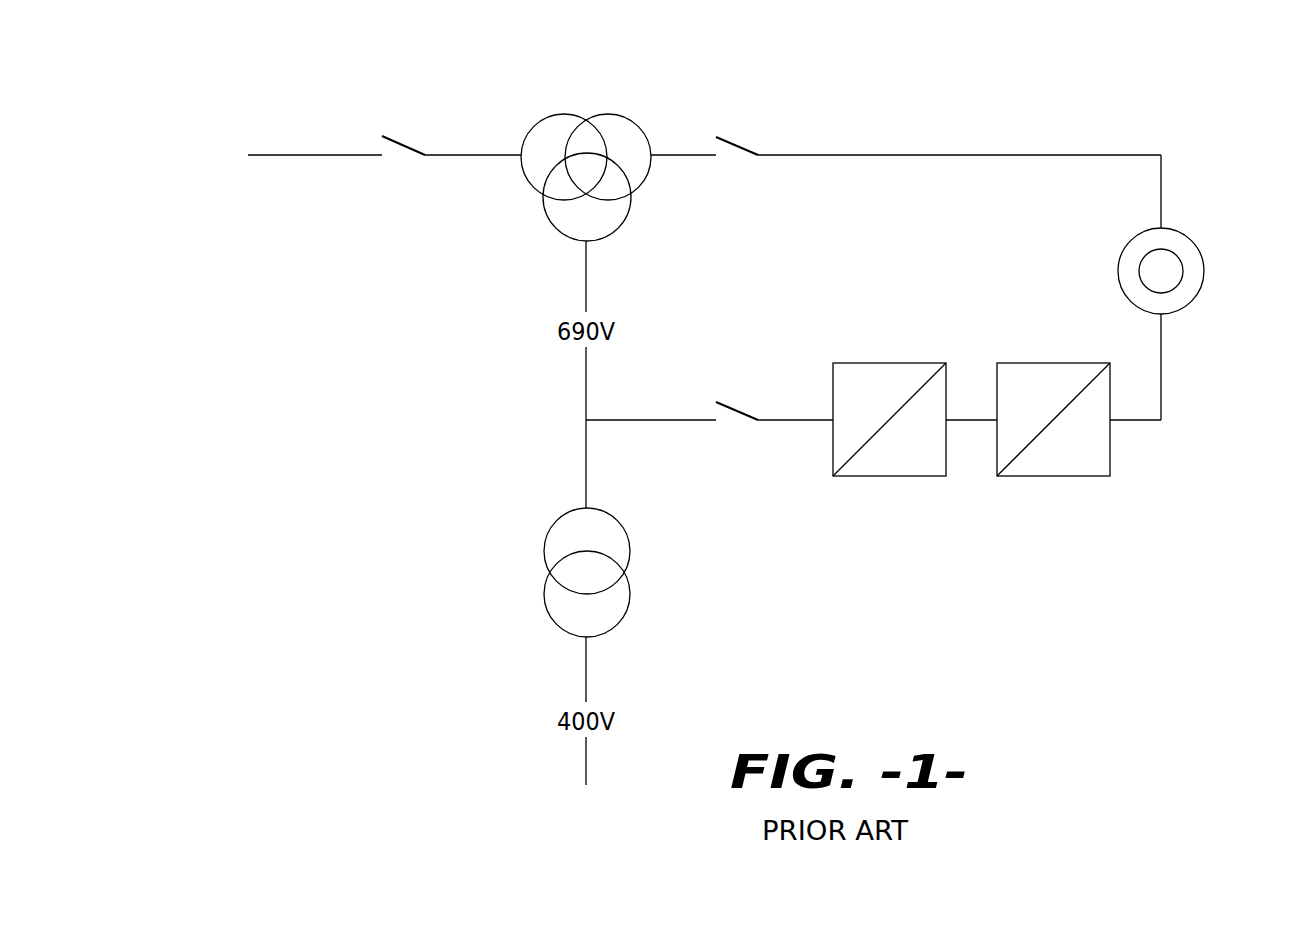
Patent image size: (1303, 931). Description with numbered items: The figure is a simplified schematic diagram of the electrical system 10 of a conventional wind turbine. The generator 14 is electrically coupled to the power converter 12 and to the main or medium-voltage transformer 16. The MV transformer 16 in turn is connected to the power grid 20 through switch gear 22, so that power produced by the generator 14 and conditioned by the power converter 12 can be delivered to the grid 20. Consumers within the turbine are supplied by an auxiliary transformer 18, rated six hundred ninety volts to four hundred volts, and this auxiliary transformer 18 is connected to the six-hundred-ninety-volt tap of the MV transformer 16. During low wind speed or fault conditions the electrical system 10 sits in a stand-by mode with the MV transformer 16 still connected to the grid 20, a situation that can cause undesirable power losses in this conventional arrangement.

The electrical system 10 is at (1083, 108).
The power converter 12 is at (970, 487).
The generator 14 is at (1205, 265).
The main or medium-voltage (MV) transformer 16 is at (618, 228).
The auxiliary transformer 18 is at (628, 610).
The power grid 20 is at (216, 215).
The switch gear 22 is at (402, 160).